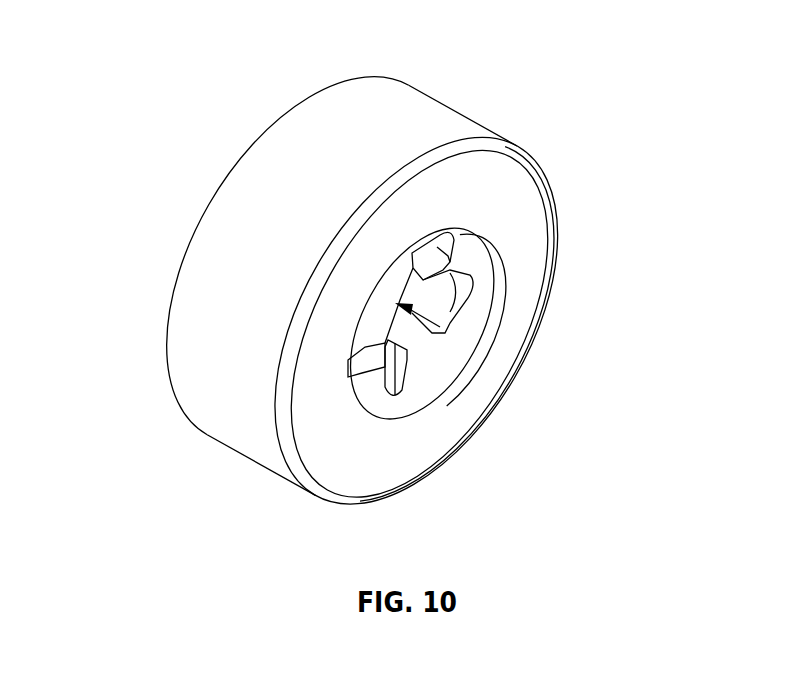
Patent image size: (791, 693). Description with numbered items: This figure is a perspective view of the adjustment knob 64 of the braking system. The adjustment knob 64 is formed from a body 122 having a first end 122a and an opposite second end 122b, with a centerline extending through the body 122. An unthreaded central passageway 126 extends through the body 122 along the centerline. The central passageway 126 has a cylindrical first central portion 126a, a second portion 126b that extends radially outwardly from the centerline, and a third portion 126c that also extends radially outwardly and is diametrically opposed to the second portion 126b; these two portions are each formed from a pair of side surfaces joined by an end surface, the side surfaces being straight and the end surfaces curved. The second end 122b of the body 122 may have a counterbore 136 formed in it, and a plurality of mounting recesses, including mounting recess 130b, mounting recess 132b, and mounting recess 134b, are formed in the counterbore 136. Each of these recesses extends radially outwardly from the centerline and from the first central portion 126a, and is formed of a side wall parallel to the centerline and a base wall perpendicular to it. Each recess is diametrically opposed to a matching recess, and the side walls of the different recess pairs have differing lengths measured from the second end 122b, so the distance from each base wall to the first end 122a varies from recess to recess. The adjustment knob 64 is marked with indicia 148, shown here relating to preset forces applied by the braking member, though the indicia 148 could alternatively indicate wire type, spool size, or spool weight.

The adjustment knob 64 is at (415, 67).
The body 122 is at (418, 125).
The first end 122a is at (266, 132).
The second end 122b is at (530, 193).
The central passageway 126 is at (440, 327).
The first central portion 126a is at (378, 317).
The second portion 126b is at (357, 377).
The third portion 126c is at (440, 265).
The mounting recess 130b is at (512, 272).
The mounting recess 132b is at (437, 347).
The mounting recess 134b is at (395, 380).
The counterbore 136 is at (490, 290).
The indicia 148 is at (453, 290).